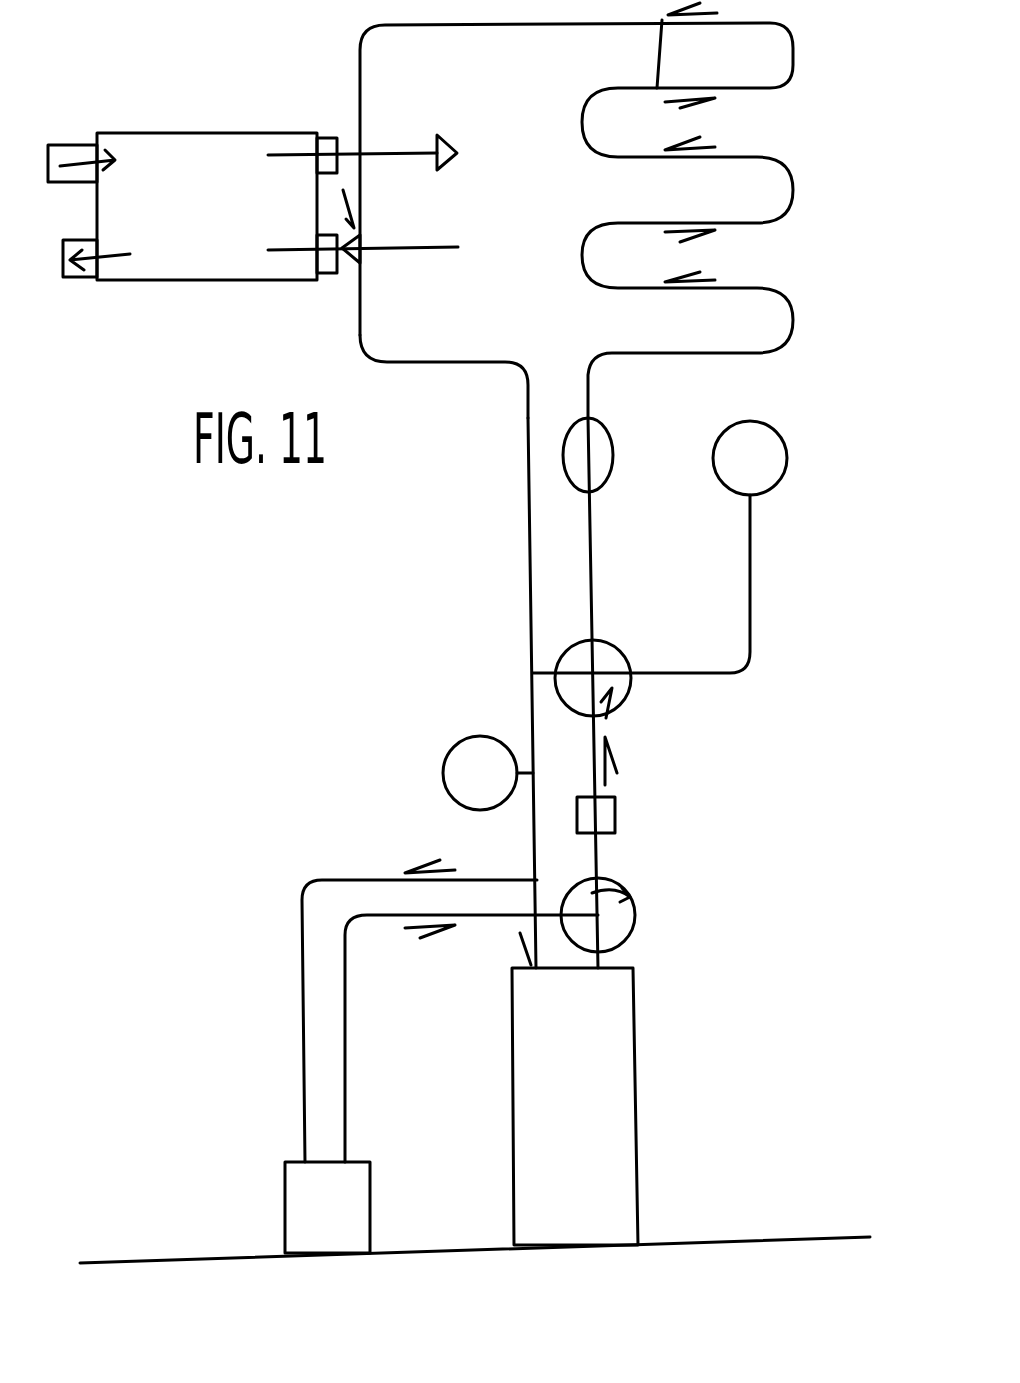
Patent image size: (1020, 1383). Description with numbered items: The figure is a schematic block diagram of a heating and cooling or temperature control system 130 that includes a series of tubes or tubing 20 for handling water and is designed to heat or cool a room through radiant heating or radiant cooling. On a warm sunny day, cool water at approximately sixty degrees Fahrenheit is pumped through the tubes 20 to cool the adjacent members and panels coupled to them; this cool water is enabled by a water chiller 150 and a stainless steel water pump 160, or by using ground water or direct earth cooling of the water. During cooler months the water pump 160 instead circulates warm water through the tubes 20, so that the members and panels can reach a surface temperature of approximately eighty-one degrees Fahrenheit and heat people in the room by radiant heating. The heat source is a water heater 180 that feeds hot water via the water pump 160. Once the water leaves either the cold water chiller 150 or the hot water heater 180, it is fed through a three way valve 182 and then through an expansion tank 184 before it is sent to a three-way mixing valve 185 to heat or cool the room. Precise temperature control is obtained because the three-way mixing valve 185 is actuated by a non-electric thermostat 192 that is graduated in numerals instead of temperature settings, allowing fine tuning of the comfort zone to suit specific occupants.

The tubes 20 is at (542, 25).
The temperature control system 130 is at (204, 551).
The water chiller 150 is at (284, 1165).
The water pump 160 is at (444, 763).
The water heater 180 is at (620, 1052).
The three way valve 182 is at (632, 893).
The expansion tank 184 is at (615, 800).
The three-way mixing valve 185 is at (628, 695).
The non-electric thermostat 192 is at (762, 460).